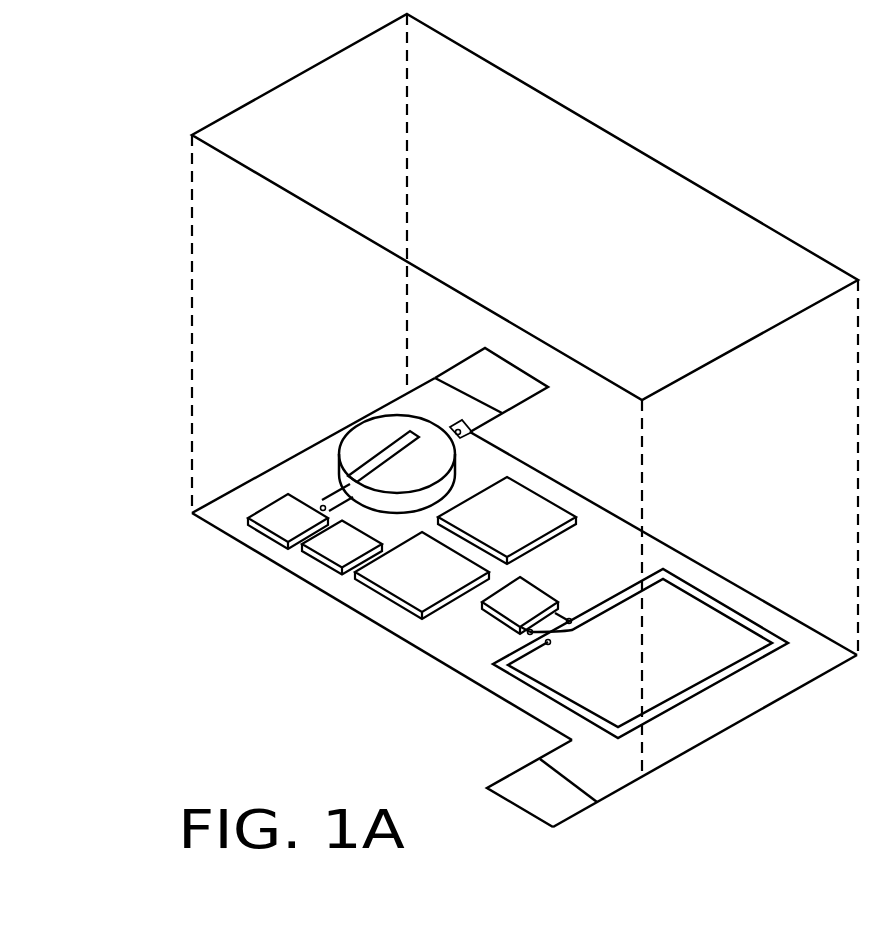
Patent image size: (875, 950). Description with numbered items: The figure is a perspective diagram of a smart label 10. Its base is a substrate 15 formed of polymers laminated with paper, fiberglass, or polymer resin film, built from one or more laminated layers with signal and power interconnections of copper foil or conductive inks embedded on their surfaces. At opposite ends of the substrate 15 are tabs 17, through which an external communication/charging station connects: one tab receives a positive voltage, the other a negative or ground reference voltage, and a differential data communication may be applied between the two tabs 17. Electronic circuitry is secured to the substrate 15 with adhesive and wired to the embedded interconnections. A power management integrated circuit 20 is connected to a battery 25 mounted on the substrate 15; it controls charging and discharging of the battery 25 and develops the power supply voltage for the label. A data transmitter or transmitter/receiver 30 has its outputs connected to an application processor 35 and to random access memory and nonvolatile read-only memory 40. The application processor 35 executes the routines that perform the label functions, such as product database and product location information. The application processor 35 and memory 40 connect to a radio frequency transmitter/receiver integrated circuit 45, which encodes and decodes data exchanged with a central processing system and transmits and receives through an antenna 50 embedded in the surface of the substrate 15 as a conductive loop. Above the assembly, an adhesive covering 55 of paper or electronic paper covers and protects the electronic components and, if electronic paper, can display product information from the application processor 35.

The smart label 10 is at (140, 110).
The substrate 15 is at (240, 486).
The tabs 17 is at (458, 363).
The power management integrated circuit 20 is at (274, 536).
The battery 25 is at (340, 447).
The data transmitter or transmitter/receiver 30 is at (325, 567).
The application processor 35 is at (420, 605).
The random access memory and nonvolatile read-only memory 40 is at (537, 486).
The radio frequency transmitter or transmitter/receiver integrated circuit 45 is at (517, 618).
The antenna 50 is at (620, 653).
The adhesive covering 55 is at (630, 143).